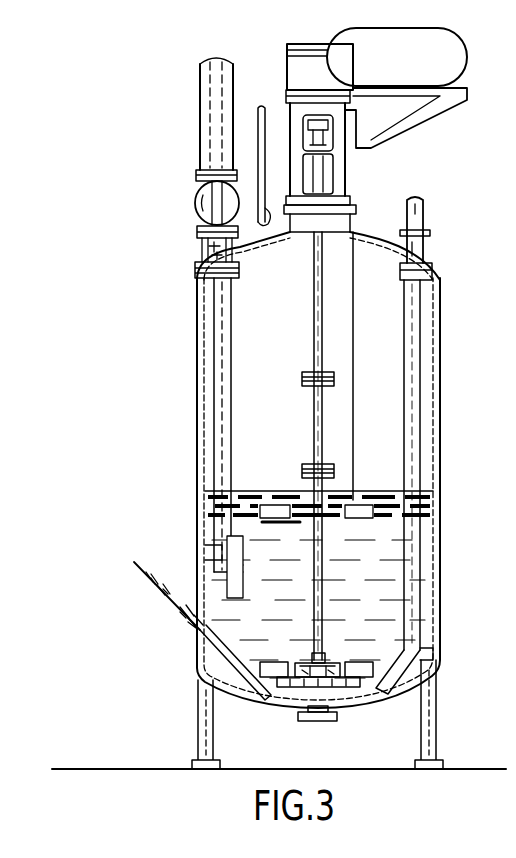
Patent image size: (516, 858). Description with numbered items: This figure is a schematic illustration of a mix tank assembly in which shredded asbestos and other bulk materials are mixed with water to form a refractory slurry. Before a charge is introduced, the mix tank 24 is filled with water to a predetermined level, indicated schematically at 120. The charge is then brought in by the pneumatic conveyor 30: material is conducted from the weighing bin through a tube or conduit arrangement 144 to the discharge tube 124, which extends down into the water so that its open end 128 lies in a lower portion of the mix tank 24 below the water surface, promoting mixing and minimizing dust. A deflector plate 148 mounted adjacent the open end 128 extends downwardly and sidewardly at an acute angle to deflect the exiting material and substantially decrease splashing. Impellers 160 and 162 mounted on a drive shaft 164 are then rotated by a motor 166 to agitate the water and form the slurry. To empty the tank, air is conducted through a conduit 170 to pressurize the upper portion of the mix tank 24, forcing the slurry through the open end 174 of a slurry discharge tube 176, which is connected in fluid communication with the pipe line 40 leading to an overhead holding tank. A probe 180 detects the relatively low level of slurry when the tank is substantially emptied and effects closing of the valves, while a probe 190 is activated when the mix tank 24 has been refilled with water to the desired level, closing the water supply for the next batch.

The mix tank 24 is at (150, 287).
The pneumatic conveyor 30 is at (190, 143).
The pipe line 40 is at (423, 210).
The predetermined water level 120 is at (256, 491).
The discharge tube 124 is at (214, 362).
The open end 128 is at (215, 549).
The tube or conduit arrangement 144 is at (236, 40).
The deflector plate 148 is at (210, 581).
The impeller 160 is at (374, 505).
The impeller 162 is at (357, 666).
The drive shaft 164 is at (312, 424).
The motor 166 is at (305, 64).
The conduit 170 is at (262, 228).
The open end 174 is at (349, 702).
The slurry discharge tube 176 is at (412, 447).
The probe 180 is at (199, 635).
The probe 190 is at (356, 392).